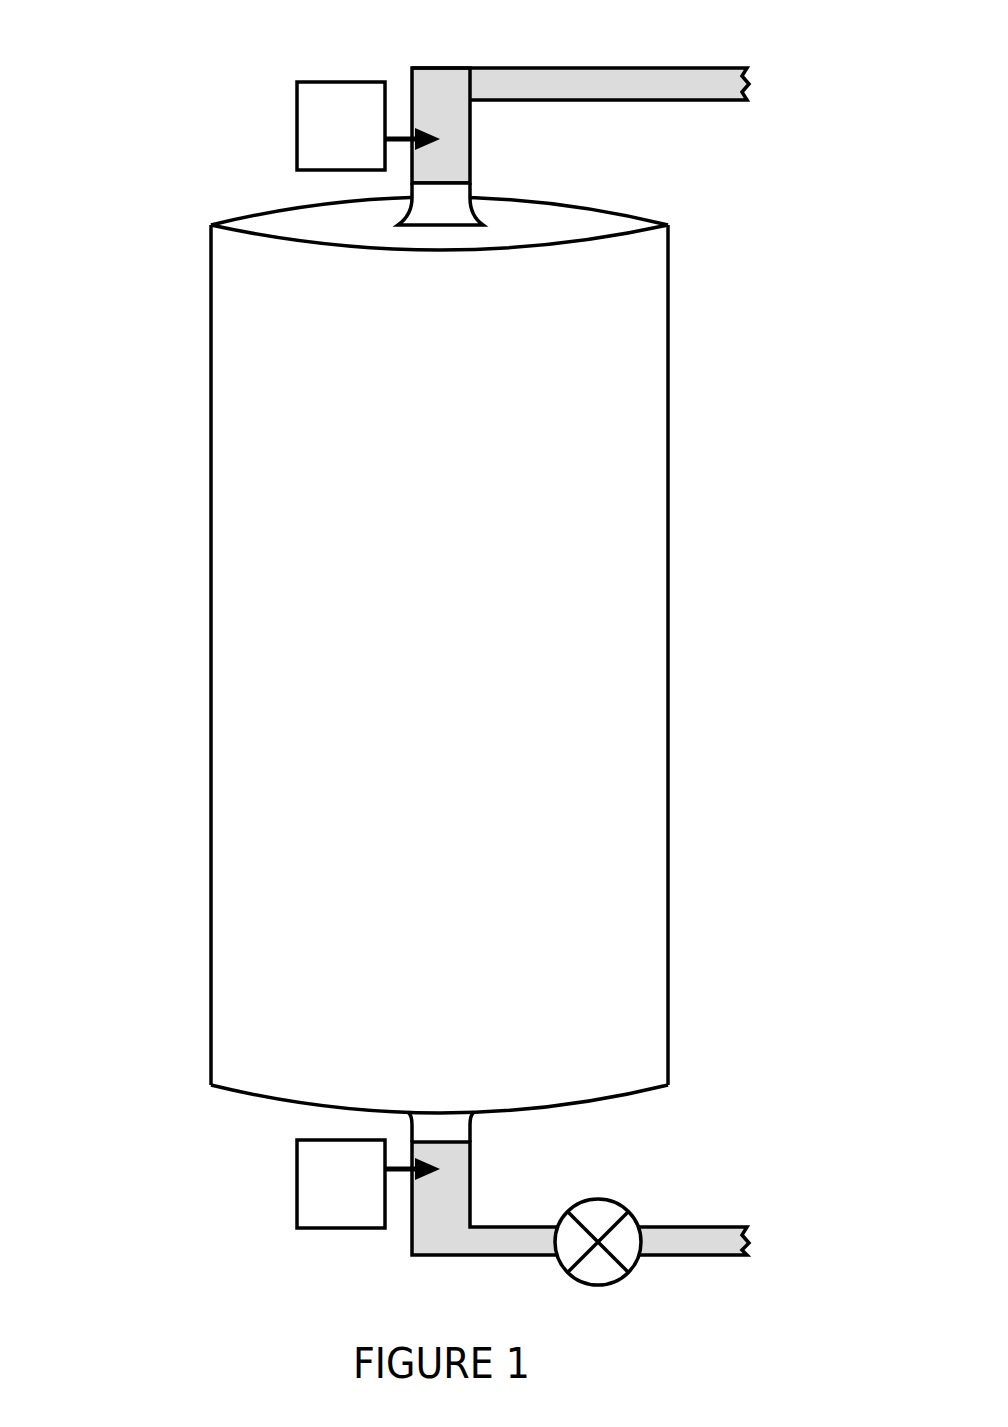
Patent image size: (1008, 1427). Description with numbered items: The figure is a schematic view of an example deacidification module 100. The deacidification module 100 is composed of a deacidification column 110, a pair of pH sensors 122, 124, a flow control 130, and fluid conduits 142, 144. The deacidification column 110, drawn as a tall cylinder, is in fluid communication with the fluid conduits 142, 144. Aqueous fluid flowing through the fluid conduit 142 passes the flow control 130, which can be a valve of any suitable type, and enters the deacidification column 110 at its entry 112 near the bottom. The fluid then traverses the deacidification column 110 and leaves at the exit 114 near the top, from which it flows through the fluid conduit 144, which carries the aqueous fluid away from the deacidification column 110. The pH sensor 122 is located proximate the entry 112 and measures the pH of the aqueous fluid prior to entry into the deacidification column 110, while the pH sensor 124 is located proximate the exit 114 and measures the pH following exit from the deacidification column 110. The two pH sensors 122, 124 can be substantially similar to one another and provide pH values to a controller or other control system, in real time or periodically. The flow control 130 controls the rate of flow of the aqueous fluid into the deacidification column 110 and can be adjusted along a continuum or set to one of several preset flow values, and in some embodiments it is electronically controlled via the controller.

The deacidification module 100 is at (150, 75).
The deacidification column 110 is at (468, 684).
The entry 112 is at (498, 1133).
The exit 114 is at (498, 177).
The pH sensor 122 is at (368, 1202).
The pH sensor 124 is at (368, 142).
The flow control 130 is at (597, 1286).
The fluid conduit 142 is at (668, 1227).
The fluid conduit 144 is at (668, 100).